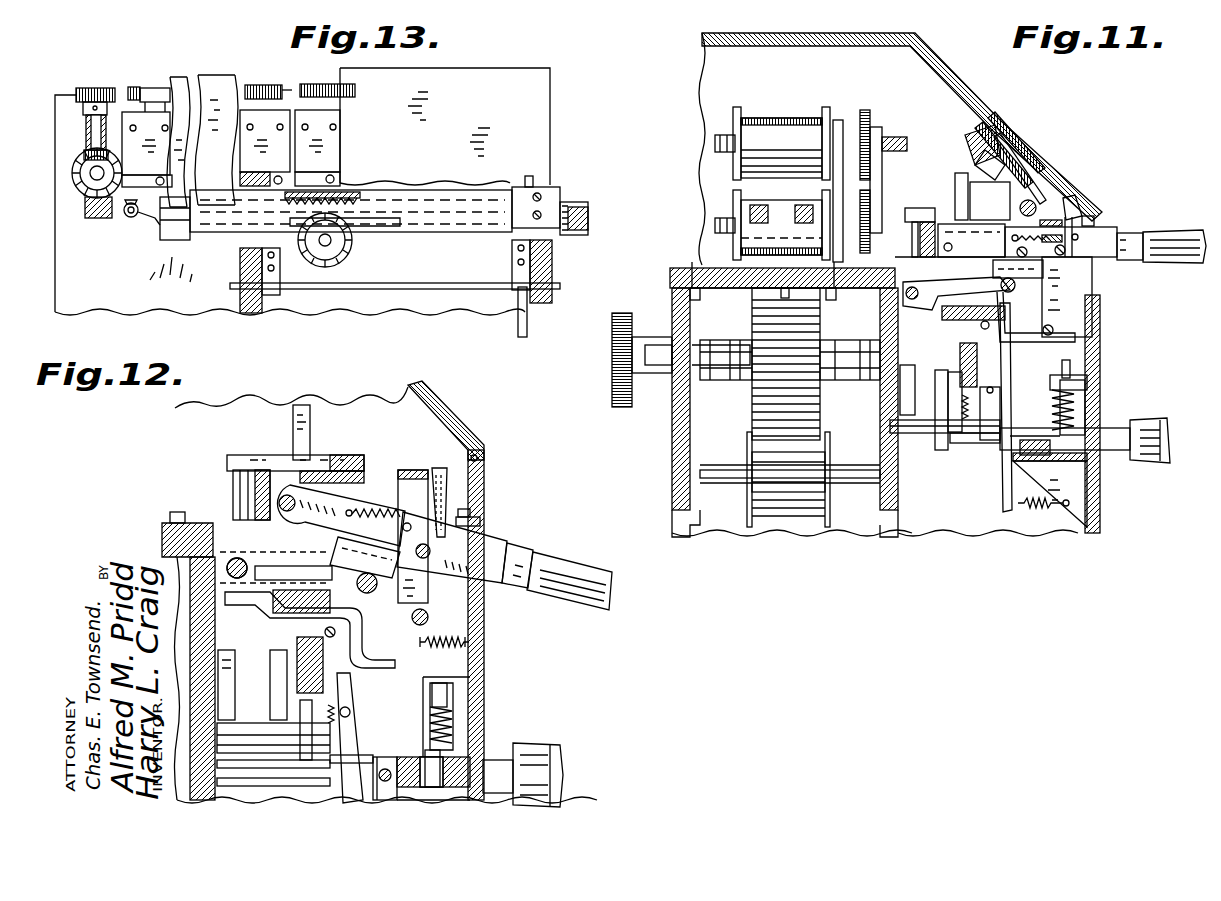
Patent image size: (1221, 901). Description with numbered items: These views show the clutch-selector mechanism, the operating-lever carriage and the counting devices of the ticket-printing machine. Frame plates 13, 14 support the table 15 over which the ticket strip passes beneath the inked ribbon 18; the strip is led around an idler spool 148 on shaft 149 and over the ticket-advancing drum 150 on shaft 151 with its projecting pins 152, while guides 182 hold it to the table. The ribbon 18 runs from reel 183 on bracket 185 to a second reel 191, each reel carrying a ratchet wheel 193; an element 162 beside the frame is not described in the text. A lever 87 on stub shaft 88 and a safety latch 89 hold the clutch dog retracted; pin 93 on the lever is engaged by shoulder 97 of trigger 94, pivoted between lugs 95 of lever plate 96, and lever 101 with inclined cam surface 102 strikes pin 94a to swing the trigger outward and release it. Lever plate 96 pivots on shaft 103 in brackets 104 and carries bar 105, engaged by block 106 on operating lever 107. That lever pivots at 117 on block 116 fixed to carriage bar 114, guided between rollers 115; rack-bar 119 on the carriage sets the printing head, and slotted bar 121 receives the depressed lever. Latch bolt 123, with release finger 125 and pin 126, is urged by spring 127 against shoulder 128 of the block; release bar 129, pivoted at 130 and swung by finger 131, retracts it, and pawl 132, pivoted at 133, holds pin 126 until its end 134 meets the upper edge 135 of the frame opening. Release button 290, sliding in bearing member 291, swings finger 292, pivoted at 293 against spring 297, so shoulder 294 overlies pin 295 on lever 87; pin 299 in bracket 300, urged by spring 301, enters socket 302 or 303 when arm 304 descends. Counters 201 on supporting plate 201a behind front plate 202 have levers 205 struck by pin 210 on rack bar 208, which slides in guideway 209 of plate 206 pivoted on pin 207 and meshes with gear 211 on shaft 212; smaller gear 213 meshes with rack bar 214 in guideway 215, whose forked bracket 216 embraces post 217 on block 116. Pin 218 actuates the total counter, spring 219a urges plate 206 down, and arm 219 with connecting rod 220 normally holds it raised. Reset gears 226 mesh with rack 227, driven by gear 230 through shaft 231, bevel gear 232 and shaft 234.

In FIG. 11, the plate 13 is at (674, 430).
In FIG. 11, the plate 14 is at (896, 488).
In FIG. 12, the plate 14 is at (195, 630).
In FIG. 11, the table 15 is at (712, 288).
In FIG. 12, the table 15 is at (162, 540).
In FIG. 11, the inked ribbon 18 is at (758, 118).
In FIG. 11, the lever 87 is at (941, 385).
In FIG. 12, the lever 87 is at (275, 662).
In FIG. 11, the stub shaft 88 is at (925, 436).
In FIG. 12, the stub shaft 88 is at (262, 721).
In FIG. 11, the safety latch 89 is at (920, 352).
In FIG. 12, the safety latch 89 is at (225, 650).
In FIG. 11, the pin 93 is at (956, 450).
In FIG. 12, the pin 93 is at (318, 740).
In FIG. 11, the trigger 94 is at (1000, 405).
In FIG. 12, the trigger 94 is at (348, 720).
In FIG. 11, the pin 94a is at (1005, 392).
In FIG. 12, the pin 94a is at (350, 710).
In FIG. 12, the lugs 95 is at (360, 650).
In FIG. 11, the lever plate 96 is at (956, 307).
In FIG. 12, the lever plate 96 is at (252, 598).
In FIG. 11, the shoulder 97 is at (968, 407).
In FIG. 12, the shoulder 97 is at (361, 715).
In FIG. 11, the lever 101 is at (962, 360).
In FIG. 12, the lever 101 is at (297, 665).
In FIG. 11, the inclined cam surface 102 is at (993, 390).
In FIG. 12, the inclined cam surface 102 is at (348, 707).
In FIG. 12, the shaft 103 is at (245, 550).
In FIG. 13, the brackets 104 is at (252, 312).
In FIG. 11, the brackets 104 is at (946, 279).
In FIG. 12, the brackets 104 is at (288, 557).
In FIG. 12, the longitudinally extending bar 105 is at (293, 571).
In FIG. 12, the block 106 is at (336, 556).
In FIG. 11, the operating lever 107 is at (1110, 234).
In FIG. 12, the operating lever 107 is at (500, 556).
In FIG. 11, the sliding bar 114 is at (914, 208).
In FIG. 12, the sliding bar 114 is at (240, 480).
In FIG. 12, the rollers 115 is at (250, 500).
In FIG. 11, the block 116 is at (985, 250).
In FIG. 12, the block 116 is at (360, 455).
In FIG. 12, the pivot 117 is at (316, 455).
In FIG. 11, the rack-bar 119 is at (884, 135).
In FIG. 12, the slotted bar 121 is at (484, 620).
In FIG. 12, the latch bolt 123 is at (330, 498).
In FIG. 11, the release finger 125 is at (1076, 205).
In FIG. 12, the release finger 125 is at (442, 476).
In FIG. 11, the pin 126 is at (1077, 246).
In FIG. 12, the pin 126 is at (404, 522).
In FIG. 11, the spring 127 is at (1032, 246).
In FIG. 12, the spring 127 is at (388, 533).
In FIG. 12, the shoulder 128 is at (294, 498).
In FIG. 11, the release bar 129 is at (1060, 293).
In FIG. 12, the release bar 129 is at (405, 470).
In FIG. 11, the pivot 130 is at (1058, 330).
In FIG. 12, the pivot 130 is at (428, 614).
In FIG. 13, the finger 131 is at (518, 318).
In FIG. 11, the pawl 132 is at (1092, 218).
In FIG. 12, the pawl 132 is at (470, 509).
In FIG. 12, the pivot 133 is at (457, 563).
In FIG. 12, the end 134 is at (480, 520).
In FIG. 12, the upper edge 135 is at (480, 462).
In FIG. 11, the idler spool 148 is at (770, 502).
In FIG. 11, the shaft 149 is at (722, 470).
In FIG. 11, the ticket-advancing drum 150 is at (786, 364).
In FIG. 11, the shaft 151 is at (836, 365).
In FIG. 11, the projecting pins 152 is at (782, 296).
In FIG. 11, the gear 162 is at (612, 360).
In FIG. 11, the guides 182 is at (735, 292).
In FIG. 11, the reel 183 is at (740, 170).
In FIG. 11, the bracket 185 is at (833, 188).
In FIG. 11, the second reel 191 is at (740, 207).
In FIG. 11, the ratchet wheel 193 is at (866, 178).
In FIG. 13, the counters 201 is at (343, 138).
In FIG. 13, the supporting plate 201a is at (534, 106).
In FIG. 11, the front plate 202 is at (978, 95).
In FIG. 13, the lever 205 is at (128, 175).
In FIG. 13, the plate 206 is at (485, 230).
In FIG. 11, the plate 206 is at (1048, 192).
In FIG. 13, the pin 207 is at (562, 284).
In FIG. 11, the pin 207 is at (1036, 206).
In FIG. 13, the rack bar 208 is at (352, 192).
In FIG. 11, the rack bar 208 is at (1012, 128).
In FIG. 13, the guideway 209 is at (405, 196).
In FIG. 13, the pin 210 is at (248, 172).
In FIG. 11, the pin 210 is at (1003, 112).
In FIG. 13, the gear 211 is at (350, 240).
In FIG. 11, the gear 211 is at (1042, 165).
In FIG. 13, the rotatable shaft 212 is at (345, 250).
In FIG. 13, the smaller gear 213 is at (342, 262).
In FIG. 11, the smaller gear 213 is at (993, 201).
In FIG. 13, the rack bar 214 is at (405, 226).
In FIG. 11, the rack bar 214 is at (965, 143).
In FIG. 13, the guideway 215 is at (443, 228).
In FIG. 13, the forked bracket 216 is at (400, 222).
In FIG. 11, the forked bracket 216 is at (975, 168).
In FIG. 11, the post 217 is at (955, 192).
In FIG. 12, the post 217 is at (293, 420).
In FIG. 13, the pin 218 is at (130, 218).
In FIG. 13, the arm 219 is at (560, 200).
In FIG. 13, the spring 219a is at (533, 181).
In FIG. 13, the adjustable connecting rod 220 is at (580, 234).
In FIG. 13, the gears 226 is at (266, 85).
In FIG. 13, the rack 227 is at (340, 93).
In FIG. 13, the driving gear 230 is at (86, 88).
In FIG. 13, the shaft 231 is at (84, 128).
In FIG. 13, the bevel gear 232 is at (84, 155).
In FIG. 13, the shaft 234 is at (95, 173).
In FIG. 11, the release button 290 is at (1158, 465).
In FIG. 12, the release button 290 is at (552, 765).
In FIG. 12, the bearing member 291 is at (395, 742).
In FIG. 11, the finger 292 is at (1003, 492).
In FIG. 12, the finger 292 is at (345, 795).
In FIG. 11, the pivot 293 is at (983, 327).
In FIG. 12, the pivot 293 is at (325, 632).
In FIG. 11, the shoulder 294 is at (976, 445).
In FIG. 12, the shoulder 294 is at (268, 770).
In FIG. 12, the pin 295 is at (270, 784).
In FIG. 11, the spring 297 is at (1025, 510).
In FIG. 11, the pin 299 is at (1072, 367).
In FIG. 12, the pin 299 is at (445, 768).
In FIG. 11, the bracket 300 is at (1087, 382).
In FIG. 12, the bracket 300 is at (470, 687).
In FIG. 11, the spring 301 is at (1080, 401).
In FIG. 12, the spring 301 is at (456, 718).
In FIG. 11, the socket 302 is at (1090, 472).
In FIG. 12, the socket 302 is at (400, 757).
In FIG. 11, the socket 303 is at (1085, 460).
In FIG. 12, the socket 303 is at (455, 782).
In FIG. 12, the arm 304 is at (430, 668).